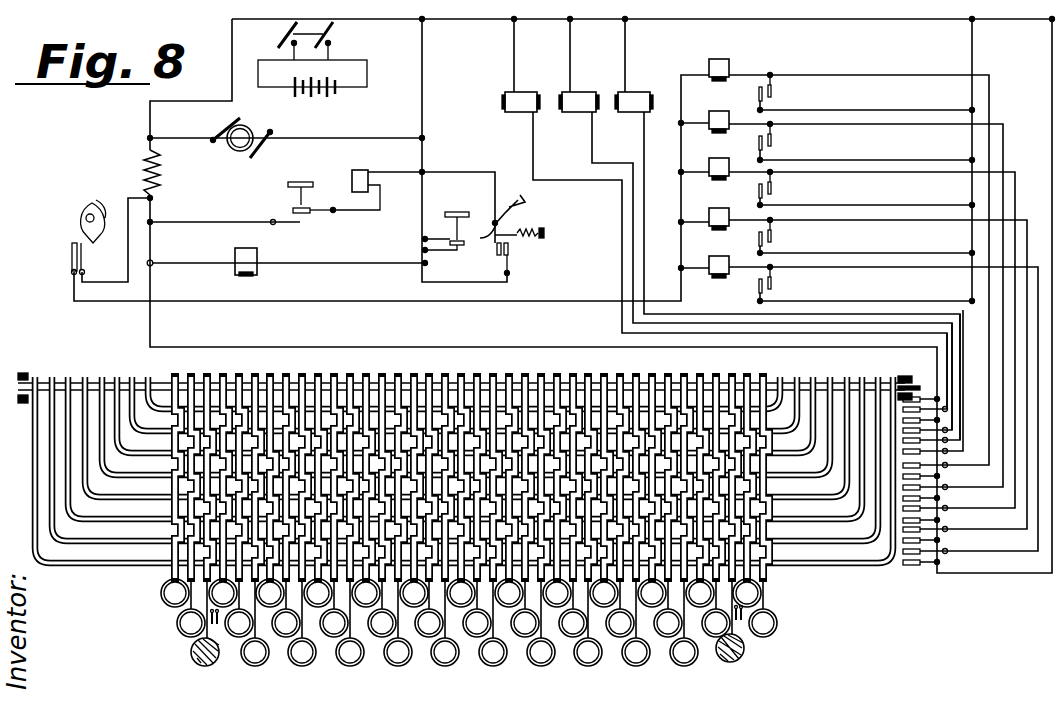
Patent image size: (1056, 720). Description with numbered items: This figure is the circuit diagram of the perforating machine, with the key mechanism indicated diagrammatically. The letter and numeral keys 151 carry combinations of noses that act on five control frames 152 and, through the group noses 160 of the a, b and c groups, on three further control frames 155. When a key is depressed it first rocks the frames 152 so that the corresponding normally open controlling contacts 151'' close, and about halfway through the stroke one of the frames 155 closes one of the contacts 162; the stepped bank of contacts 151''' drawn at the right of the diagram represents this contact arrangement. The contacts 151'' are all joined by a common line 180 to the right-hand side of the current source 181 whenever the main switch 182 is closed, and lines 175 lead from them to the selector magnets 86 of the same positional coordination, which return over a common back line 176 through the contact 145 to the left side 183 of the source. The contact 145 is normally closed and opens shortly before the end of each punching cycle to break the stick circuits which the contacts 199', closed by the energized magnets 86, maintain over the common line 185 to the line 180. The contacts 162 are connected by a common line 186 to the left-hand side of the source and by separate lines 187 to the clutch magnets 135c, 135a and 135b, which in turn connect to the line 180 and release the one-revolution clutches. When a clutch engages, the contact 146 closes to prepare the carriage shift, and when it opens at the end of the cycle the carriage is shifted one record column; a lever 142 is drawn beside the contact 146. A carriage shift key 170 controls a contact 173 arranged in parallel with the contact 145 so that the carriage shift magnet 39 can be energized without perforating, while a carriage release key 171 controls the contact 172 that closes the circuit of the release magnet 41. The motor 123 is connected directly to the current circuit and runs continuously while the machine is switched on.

The main switch 182 is at (325, 36).
The current source 181 is at (312, 77).
The left side of the current source 183 is at (150, 128).
The motor 123 is at (232, 148).
The contact 145 is at (72, 250).
The release magnet 41 is at (377, 178).
The carriage release key 171 is at (751, 652).
The contact 172 is at (782, 632).
The carriage shift key 170 is at (152, 646).
The contact 173 is at (178, 664).
The armature lever 142 is at (520, 204).
The contact 146 is at (519, 248).
The carriage shift magnet 39 is at (254, 258).
The clutch magnet 135a is at (580, 110).
The clutch magnet 135b is at (640, 95).
The clutch magnet 135c is at (515, 110).
The selector magnets 86 is at (716, 220).
The contacts 199' is at (866, 188).
The common line 185 is at (972, 185).
The common line 180 is at (985, 583).
The common line 186 is at (290, 338).
The common back line 176 is at (492, 304).
The separate lines 187 is at (707, 318).
The noses 160 is at (185, 395).
The control frames 152 is at (800, 578).
The letter and numeral keys 151 is at (469, 529).
The controlling contacts 151'' is at (150, 576).
The contact bank 151''' is at (913, 526).
The contacts 162 is at (903, 440).
The lines 175 is at (965, 530).
The control frames 155 is at (813, 383).